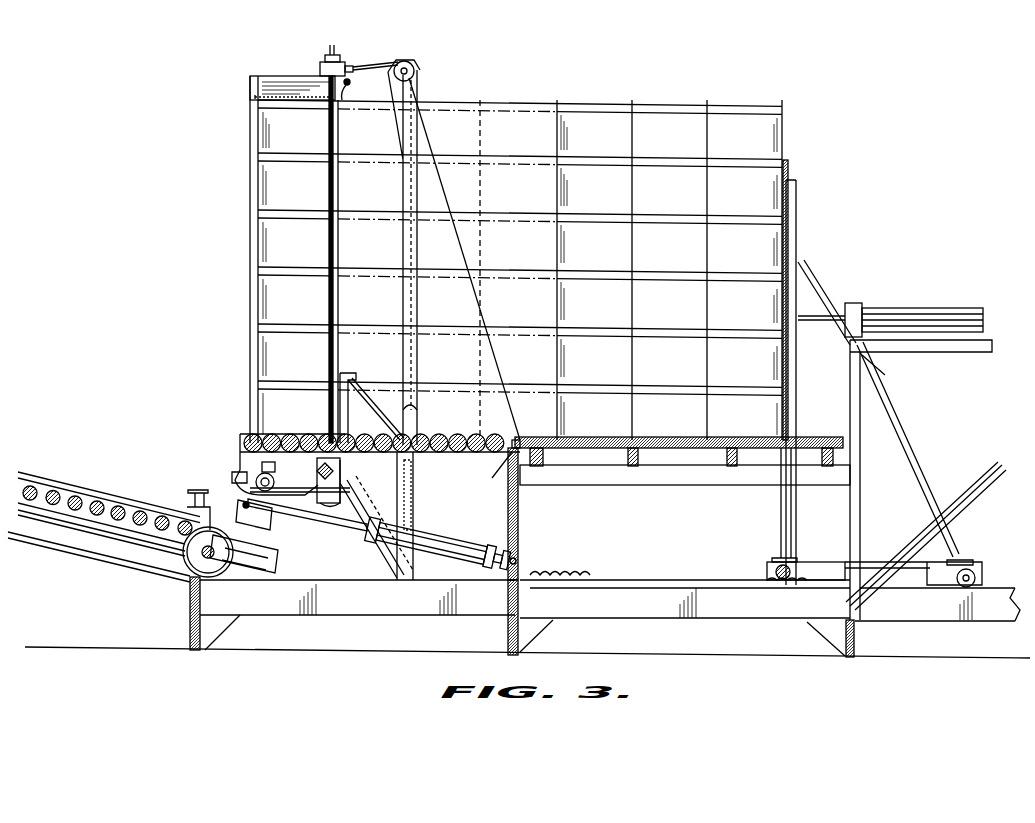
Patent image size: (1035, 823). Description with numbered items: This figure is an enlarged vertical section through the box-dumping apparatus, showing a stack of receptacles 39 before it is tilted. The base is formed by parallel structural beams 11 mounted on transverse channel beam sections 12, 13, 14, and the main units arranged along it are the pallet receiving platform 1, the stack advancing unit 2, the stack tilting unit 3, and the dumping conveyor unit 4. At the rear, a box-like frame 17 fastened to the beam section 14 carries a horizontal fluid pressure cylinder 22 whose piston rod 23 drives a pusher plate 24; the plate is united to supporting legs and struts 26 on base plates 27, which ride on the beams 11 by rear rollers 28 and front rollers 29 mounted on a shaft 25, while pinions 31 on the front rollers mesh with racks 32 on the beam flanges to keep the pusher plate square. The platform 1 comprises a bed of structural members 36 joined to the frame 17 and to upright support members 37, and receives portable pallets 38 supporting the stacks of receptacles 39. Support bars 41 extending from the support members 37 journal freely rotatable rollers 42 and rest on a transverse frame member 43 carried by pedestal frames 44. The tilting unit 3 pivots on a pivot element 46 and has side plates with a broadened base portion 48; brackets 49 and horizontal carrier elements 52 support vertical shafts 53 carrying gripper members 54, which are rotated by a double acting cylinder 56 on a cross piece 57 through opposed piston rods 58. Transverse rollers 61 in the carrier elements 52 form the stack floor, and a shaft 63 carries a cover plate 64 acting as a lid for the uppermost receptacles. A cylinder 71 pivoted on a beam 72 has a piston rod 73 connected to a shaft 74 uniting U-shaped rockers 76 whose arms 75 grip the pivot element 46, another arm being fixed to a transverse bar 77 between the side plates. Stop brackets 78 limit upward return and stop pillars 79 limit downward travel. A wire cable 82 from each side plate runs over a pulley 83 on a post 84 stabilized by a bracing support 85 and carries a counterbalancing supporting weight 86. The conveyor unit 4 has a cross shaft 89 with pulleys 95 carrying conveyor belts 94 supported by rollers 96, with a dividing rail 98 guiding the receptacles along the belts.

The pallet receiving platform 1 is at (806, 443).
The stack advancing unit 2 is at (798, 366).
The stack tilting unit 3 is at (331, 42).
The dumping conveyor unit 4 is at (79, 460).
The structural beams 11 is at (378, 604).
The channel beam section 12 is at (190, 630).
The channel beam section 13 is at (508, 636).
The channel beam section 14 is at (856, 643).
The box-like frame 17 is at (942, 348).
The fluid pressure cylinder 22 is at (914, 306).
The piston rod 23 is at (838, 316).
The pusher plate 24 is at (788, 196).
The shaft 25 is at (786, 580).
The supporting legs and struts 26 is at (900, 430).
The base plates 27 is at (818, 568).
The rear rollers 28 is at (960, 586).
The front rollers 29 is at (770, 575).
The pinions 31 is at (770, 566).
The racks 32 is at (568, 573).
The structural members 36 is at (582, 480).
The upright support members 37 is at (520, 526).
The portable pallets 38 is at (538, 434).
The stacks of receptacles 39 is at (730, 104).
The support bars 41 is at (434, 466).
The rollers 42 is at (458, 434).
The frame member 43 is at (340, 462).
The pedestal frames 44 is at (270, 518).
The pivot element 46 is at (341, 478).
The base portion 48 is at (323, 72).
The brackets 49 is at (350, 66).
The carrier elements 52 is at (250, 446).
The shafts 53 is at (335, 56).
The gripper members 54 is at (298, 80).
The fluid pressure cylinder 56 is at (252, 486).
The cross piece 57 is at (276, 462).
The piston rods 58 is at (275, 480).
The rollers 61 is at (244, 436).
The shaft 63 is at (351, 82).
The cover plate 64 is at (252, 80).
The cylinder 71 is at (428, 544).
The beam 72 is at (515, 556).
The piston rod 73 is at (320, 530).
The shaft 74 is at (245, 507).
The arms 75 is at (348, 492).
The rockers 76 is at (230, 478).
The bar 77 is at (237, 466).
The stop brackets 78 is at (348, 380).
The stop pillars 79 is at (192, 492).
The wire cable 82 is at (376, 63).
The pulley 83 is at (412, 62).
The post 84 is at (418, 263).
The bracing support 85 is at (452, 178).
The supporting weight 86 is at (412, 497).
The cross shaft 89 is at (195, 575).
The conveyor belts 94 is at (140, 575).
The pulleys 95 is at (203, 556).
The rollers 96 is at (124, 494).
The dividing rail 98 is at (62, 476).